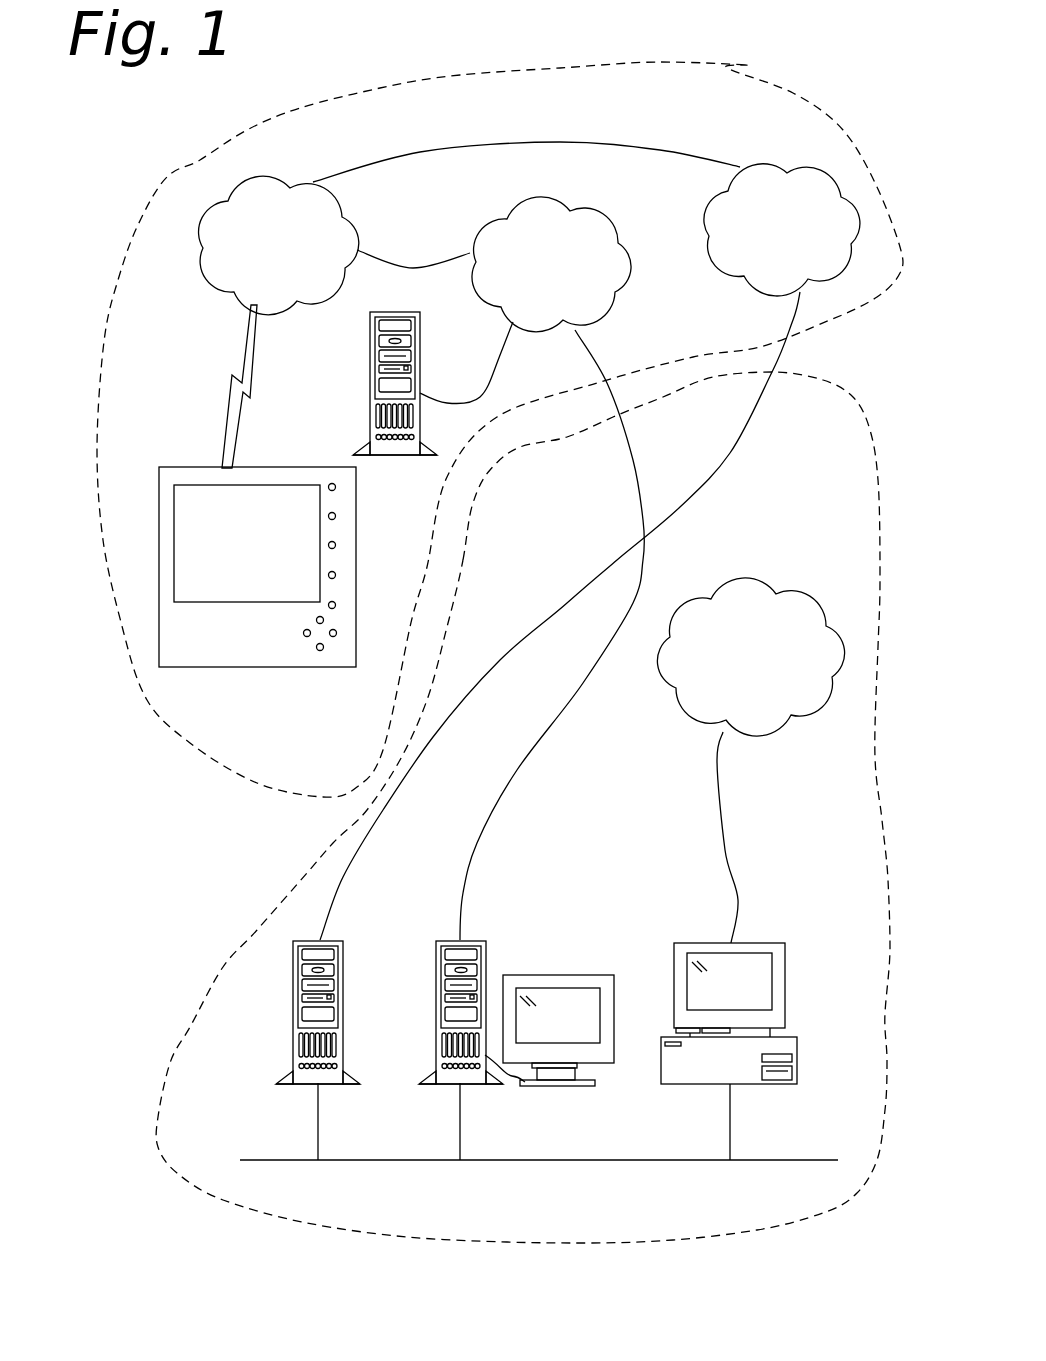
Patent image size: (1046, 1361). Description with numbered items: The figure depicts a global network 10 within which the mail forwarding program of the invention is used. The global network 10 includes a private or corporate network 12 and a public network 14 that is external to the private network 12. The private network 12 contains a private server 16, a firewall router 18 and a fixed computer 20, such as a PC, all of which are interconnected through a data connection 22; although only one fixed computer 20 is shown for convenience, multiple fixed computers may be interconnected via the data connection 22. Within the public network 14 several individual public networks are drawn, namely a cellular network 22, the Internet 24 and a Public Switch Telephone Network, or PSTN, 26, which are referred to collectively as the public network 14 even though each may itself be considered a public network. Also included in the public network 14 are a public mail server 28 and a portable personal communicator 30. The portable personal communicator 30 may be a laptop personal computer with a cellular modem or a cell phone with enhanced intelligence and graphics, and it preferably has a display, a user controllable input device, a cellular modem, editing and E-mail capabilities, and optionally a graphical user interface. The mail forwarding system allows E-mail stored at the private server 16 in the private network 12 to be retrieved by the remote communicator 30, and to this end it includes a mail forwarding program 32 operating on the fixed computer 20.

The global network 10 is at (233, 917).
The private network 12 is at (853, 397).
The public network 14 is at (730, 68).
The private server 16 is at (345, 958).
The firewall router 18 is at (550, 975).
The fixed computer 20 is at (752, 943).
The data connection 22 is at (200, 270).
The Internet 24 is at (520, 200).
The Public Switch Telephone Network (PSTN) 26 is at (762, 173).
The public mail server 28 is at (370, 357).
The portable personal communicator 30 is at (193, 467).
The mail forwarding program 32 is at (785, 588).